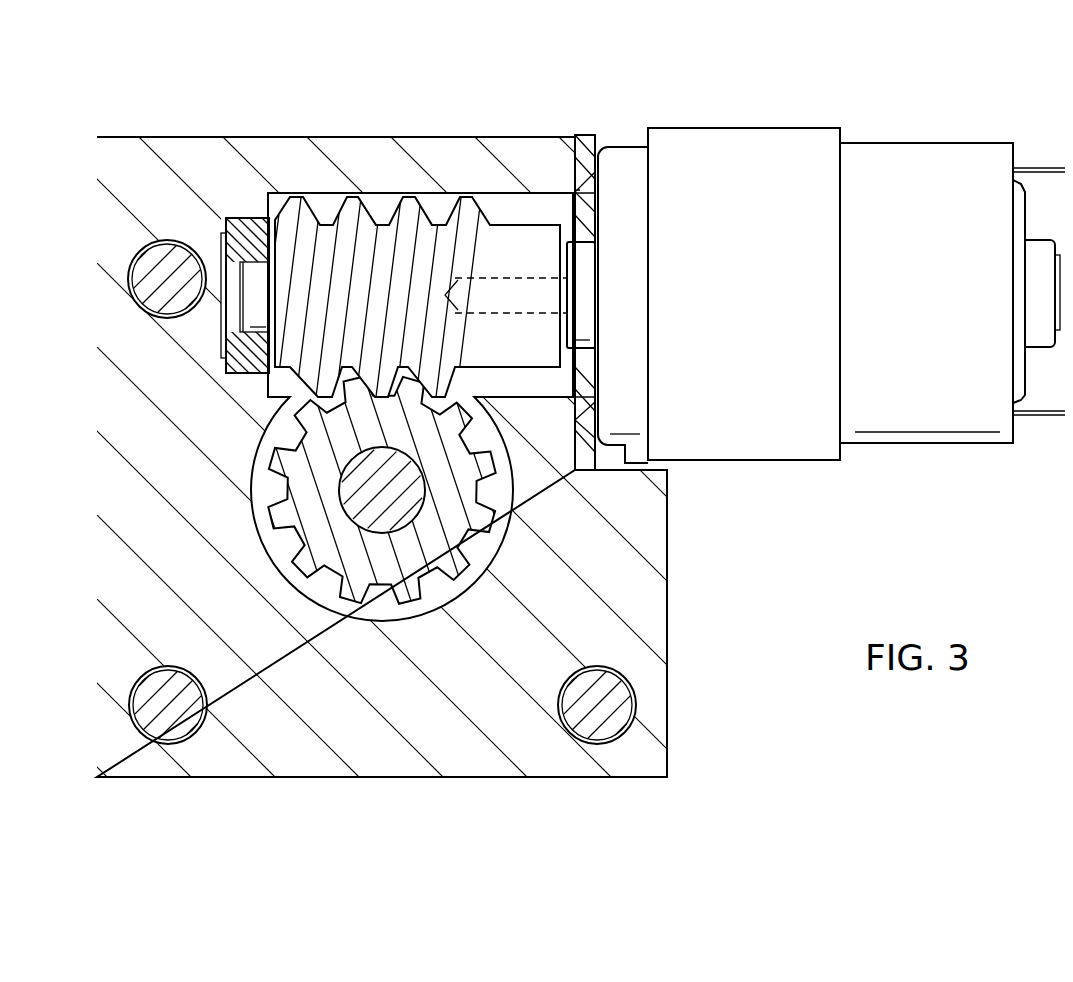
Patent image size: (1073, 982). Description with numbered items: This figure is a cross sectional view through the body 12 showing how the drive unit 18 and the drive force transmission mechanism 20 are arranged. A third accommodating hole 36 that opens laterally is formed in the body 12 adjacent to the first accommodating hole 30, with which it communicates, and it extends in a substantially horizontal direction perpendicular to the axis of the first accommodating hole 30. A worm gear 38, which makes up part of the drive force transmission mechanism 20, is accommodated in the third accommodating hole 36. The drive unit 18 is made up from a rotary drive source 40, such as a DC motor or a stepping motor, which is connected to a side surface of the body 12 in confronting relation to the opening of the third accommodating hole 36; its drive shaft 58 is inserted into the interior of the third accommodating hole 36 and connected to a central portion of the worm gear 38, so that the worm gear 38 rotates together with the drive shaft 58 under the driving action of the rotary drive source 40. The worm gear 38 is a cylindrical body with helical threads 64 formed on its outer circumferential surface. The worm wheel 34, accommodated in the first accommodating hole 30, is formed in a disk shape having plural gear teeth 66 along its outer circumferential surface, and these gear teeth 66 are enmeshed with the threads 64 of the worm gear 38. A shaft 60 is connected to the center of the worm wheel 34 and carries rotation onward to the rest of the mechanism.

The body 12 is at (563, 797).
The drive unit 18 is at (831, 287).
The drive force transmission mechanism 20 is at (297, 528).
The first accommodating hole 30 is at (498, 493).
The worm wheel 34 is at (410, 588).
The third accommodating hole 36 is at (401, 242).
The worm gear 38 is at (422, 223).
The rotary drive source 40 is at (940, 413).
The drive shaft 58 is at (513, 292).
The shaft 60 is at (378, 492).
The helical threads 64 is at (367, 223).
The gear teeth 66 is at (437, 572).